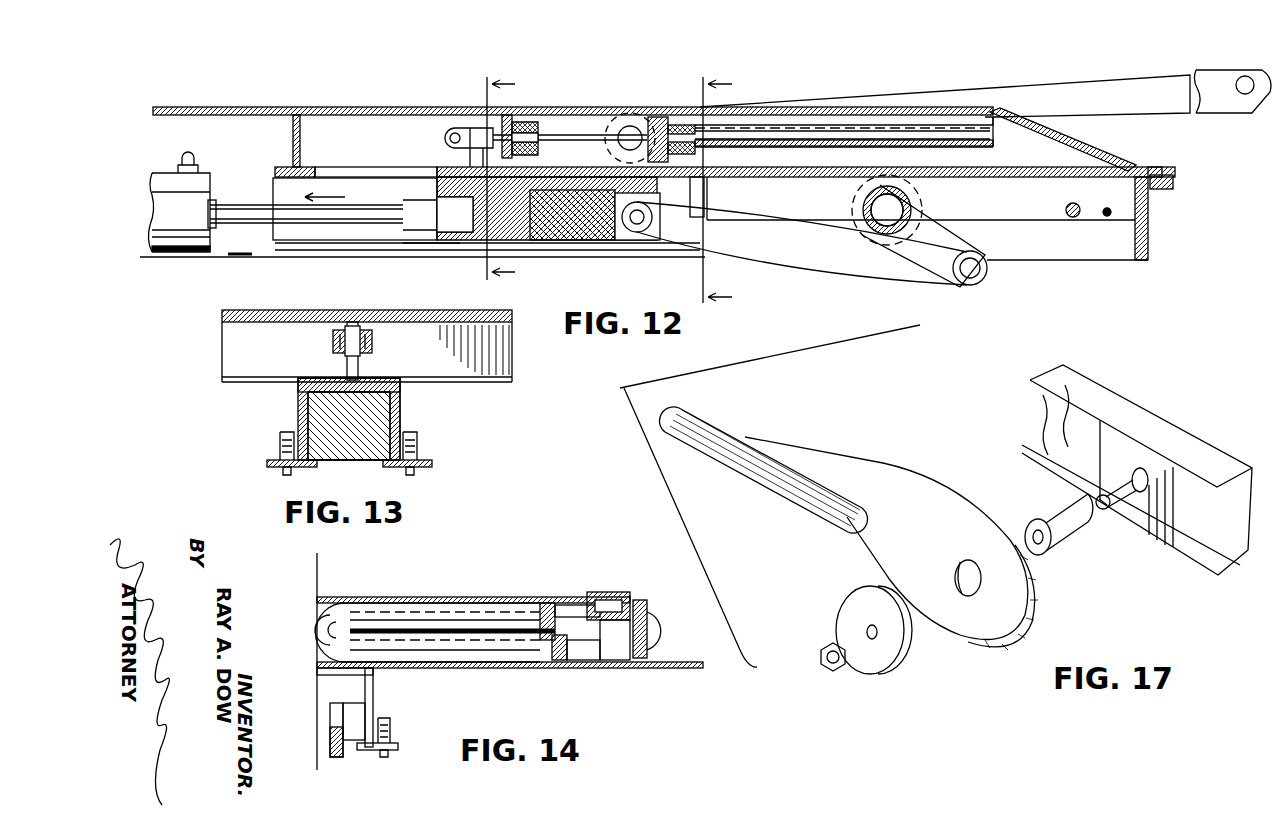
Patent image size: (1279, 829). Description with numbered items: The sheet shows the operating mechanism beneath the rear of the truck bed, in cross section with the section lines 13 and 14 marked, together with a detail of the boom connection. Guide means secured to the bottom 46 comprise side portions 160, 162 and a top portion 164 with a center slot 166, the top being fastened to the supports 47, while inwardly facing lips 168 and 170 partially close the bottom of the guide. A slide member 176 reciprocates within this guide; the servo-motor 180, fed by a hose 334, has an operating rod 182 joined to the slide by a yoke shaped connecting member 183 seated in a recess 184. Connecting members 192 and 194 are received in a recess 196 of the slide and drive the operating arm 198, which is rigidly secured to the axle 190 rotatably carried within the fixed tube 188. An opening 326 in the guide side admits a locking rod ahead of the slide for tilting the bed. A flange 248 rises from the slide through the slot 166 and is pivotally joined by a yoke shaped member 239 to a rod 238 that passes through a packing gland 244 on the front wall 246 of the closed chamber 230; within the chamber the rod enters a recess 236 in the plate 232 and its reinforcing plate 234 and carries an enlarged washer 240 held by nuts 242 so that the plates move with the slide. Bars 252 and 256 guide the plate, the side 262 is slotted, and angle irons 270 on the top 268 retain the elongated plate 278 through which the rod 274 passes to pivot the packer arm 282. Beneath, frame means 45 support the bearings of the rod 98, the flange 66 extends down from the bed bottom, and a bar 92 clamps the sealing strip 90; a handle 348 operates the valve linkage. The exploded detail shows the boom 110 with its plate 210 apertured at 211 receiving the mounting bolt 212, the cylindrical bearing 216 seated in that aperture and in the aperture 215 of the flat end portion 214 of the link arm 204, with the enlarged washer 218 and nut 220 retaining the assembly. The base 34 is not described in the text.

In FIG. 12, the section line 13— 13 is at (514, 176).
In FIG. 12, the section line 14— 14 is at (731, 189).
In FIG. 12, the base 34 is at (240, 242).
In FIG. 12, the frame means 45 is at (150, 258).
In FIG. 14, the frame means 45 is at (661, 668).
In FIG. 12, the bottom 46 is at (288, 107).
In FIG. 13, the bottom 46 is at (346, 312).
In FIG. 12, the supports or braces 47 is at (301, 142).
In FIG. 13, the supports or braces 47 is at (236, 346).
In FIG. 12, the plate or flange 66 is at (1150, 245).
In FIG. 12, the sealing member or strip 90 is at (1174, 172).
In FIG. 12, the flat plate or bar 92 is at (1168, 190).
In FIG. 12, the bar or rod 98 is at (1110, 217).
In FIG. 17, the boom 110 is at (1140, 421).
In FIG. 13, the side portion 160 is at (298, 408).
In FIG. 12, the side portion 162 is at (273, 193).
In FIG. 13, the side portion 162 is at (401, 393).
In FIG. 14, the side portion 162 is at (374, 700).
In FIG. 12, the top portion 164 is at (283, 168).
In FIG. 13, the top portion 164 is at (378, 386).
In FIG. 14, the top portion 164 is at (374, 672).
In FIG. 12, the slot 166 is at (378, 176).
In FIG. 13, the slot 166 is at (372, 376).
In FIG. 13, the inwardly facing flange or lip 168 is at (312, 464).
In FIG. 12, the inwardly facing flange or lip 170 is at (306, 251).
In FIG. 13, the inwardly facing flange or lip 170 is at (424, 464).
In FIG. 14, the inwardly facing flange or lip 170 is at (381, 752).
In FIG. 12, the link or slide member 176 is at (530, 215).
In FIG. 13, the link or slide member 176 is at (392, 426).
In FIG. 14, the link or slide member 176 is at (330, 706).
In FIG. 12, the servo-motor 180 is at (206, 252).
In FIG. 12, the operating rod 182 is at (366, 221).
In FIG. 12, the yoke shaped connecting member 183 is at (408, 245).
In FIG. 12, the recess 184 is at (455, 232).
In FIG. 12, the fixed tube or pipe 188 is at (921, 200).
In FIG. 12, the axle 190 is at (862, 208).
In FIG. 12, the connecting member 192 is at (870, 268).
In FIG. 14, the connecting member 194 is at (330, 751).
In FIG. 12, the recess 196 is at (637, 233).
In FIG. 14, the recess 196 is at (362, 712).
In FIG. 12, the operating arm 198 is at (962, 243).
In FIG. 17, the link arm 204 is at (722, 420).
In FIG. 17, the plate 210 is at (1166, 542).
In FIG. 17, the aperture 211 is at (1128, 466).
In FIG. 17, the mounting bolt 212 is at (1105, 510).
In FIG. 17, the flat end portion 214 is at (892, 476).
In FIG. 17, the aperture 215 is at (955, 573).
In FIG. 17, the cylindrical bearing or sleeve 216 is at (1060, 550).
In FIG. 17, the enlarged washer 218 is at (892, 666).
In FIG. 17, the nut 220 is at (829, 671).
In FIG. 12, the closed chamber 230 is at (1026, 136).
In FIG. 14, the closed chamber 230 is at (461, 600).
In FIG. 12, the plate 232 is at (910, 146).
In FIG. 14, the plate 232 is at (490, 636).
In FIG. 12, the reinforcing plate 234 is at (822, 131).
In FIG. 14, the reinforcing plate 234 is at (426, 620).
In FIG. 12, the recess 236 is at (782, 134).
In FIG. 12, the rod 238 is at (618, 128).
In FIG. 13, the rod 238 is at (361, 328).
In FIG. 12, the yoke shaped member 239 is at (478, 135).
In FIG. 13, the yoke shaped member 239 is at (333, 340).
In FIG. 12, the enlarged washer 240 is at (676, 120).
In FIG. 14, the enlarged washer 240 is at (320, 606).
In FIG. 12, the nuts 242 is at (646, 152).
In FIG. 14, the nuts 242 is at (320, 636).
In FIG. 12, the packing gland 244 is at (533, 128).
In FIG. 12, the front wall 246 is at (495, 128).
In FIG. 12, the flange 248 is at (465, 158).
In FIG. 13, the flange 248 is at (345, 362).
In FIG. 12, the bar 252 is at (993, 120).
In FIG. 14, the bar 252 is at (537, 605).
In FIG. 12, the bar 256 is at (1082, 156).
In FIG. 14, the bar 256 is at (596, 660).
In FIG. 12, the side 262 is at (593, 125).
In FIG. 14, the side 262 is at (601, 668).
In FIG. 14, the top 268 is at (371, 597).
In FIG. 14, the angle irons 270 is at (596, 592).
In FIG. 14, the rod 274 is at (576, 605).
In FIG. 14, the elongated plate 278 is at (644, 602).
In FIG. 12, the packer arm 282 is at (1112, 93).
In FIG. 14, the packer arm 282 is at (661, 630).
In FIG. 12, the opening 326 is at (556, 245).
In FIG. 12, the hose 334 is at (184, 165).
In FIG. 12, the elongated handle 348 is at (1066, 208).